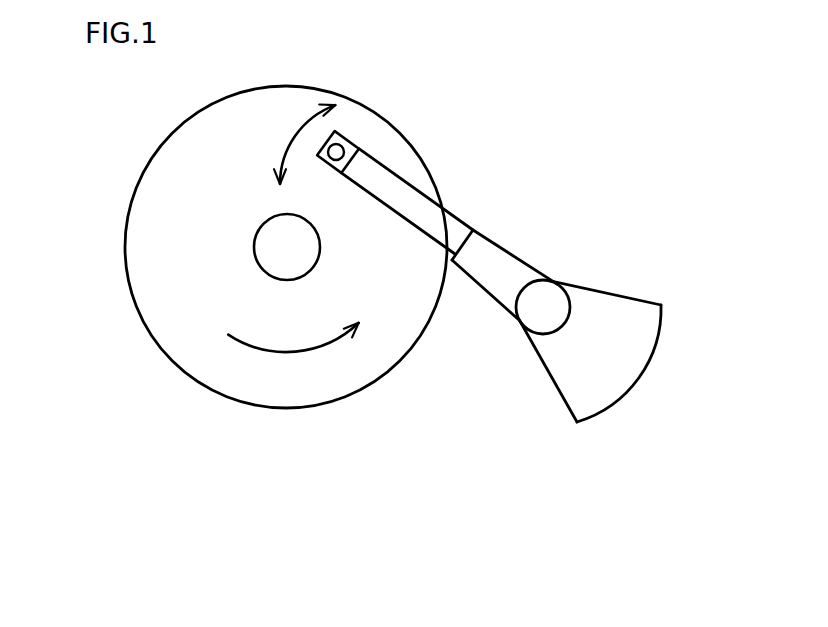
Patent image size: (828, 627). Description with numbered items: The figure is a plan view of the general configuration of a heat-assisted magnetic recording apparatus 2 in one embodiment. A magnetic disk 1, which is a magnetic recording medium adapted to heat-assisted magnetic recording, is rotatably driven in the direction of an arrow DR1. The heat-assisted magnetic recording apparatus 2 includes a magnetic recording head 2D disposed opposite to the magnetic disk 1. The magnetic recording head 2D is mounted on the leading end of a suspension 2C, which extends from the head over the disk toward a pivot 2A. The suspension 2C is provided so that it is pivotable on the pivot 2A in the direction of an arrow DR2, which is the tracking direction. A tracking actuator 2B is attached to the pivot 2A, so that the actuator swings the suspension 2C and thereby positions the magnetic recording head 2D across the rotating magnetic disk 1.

The magnetic disk 1 is at (178, 367).
The heat-assisted magnetic recording apparatus 2 is at (489, 238).
The pivot 2A is at (537, 312).
The tracking actuator 2B is at (573, 382).
The suspension 2C is at (401, 198).
The magnetic recording head 2D is at (338, 145).
The direction of rotation of the magnetic disk DR1 is at (285, 354).
The tracking direction DR2 is at (299, 130).